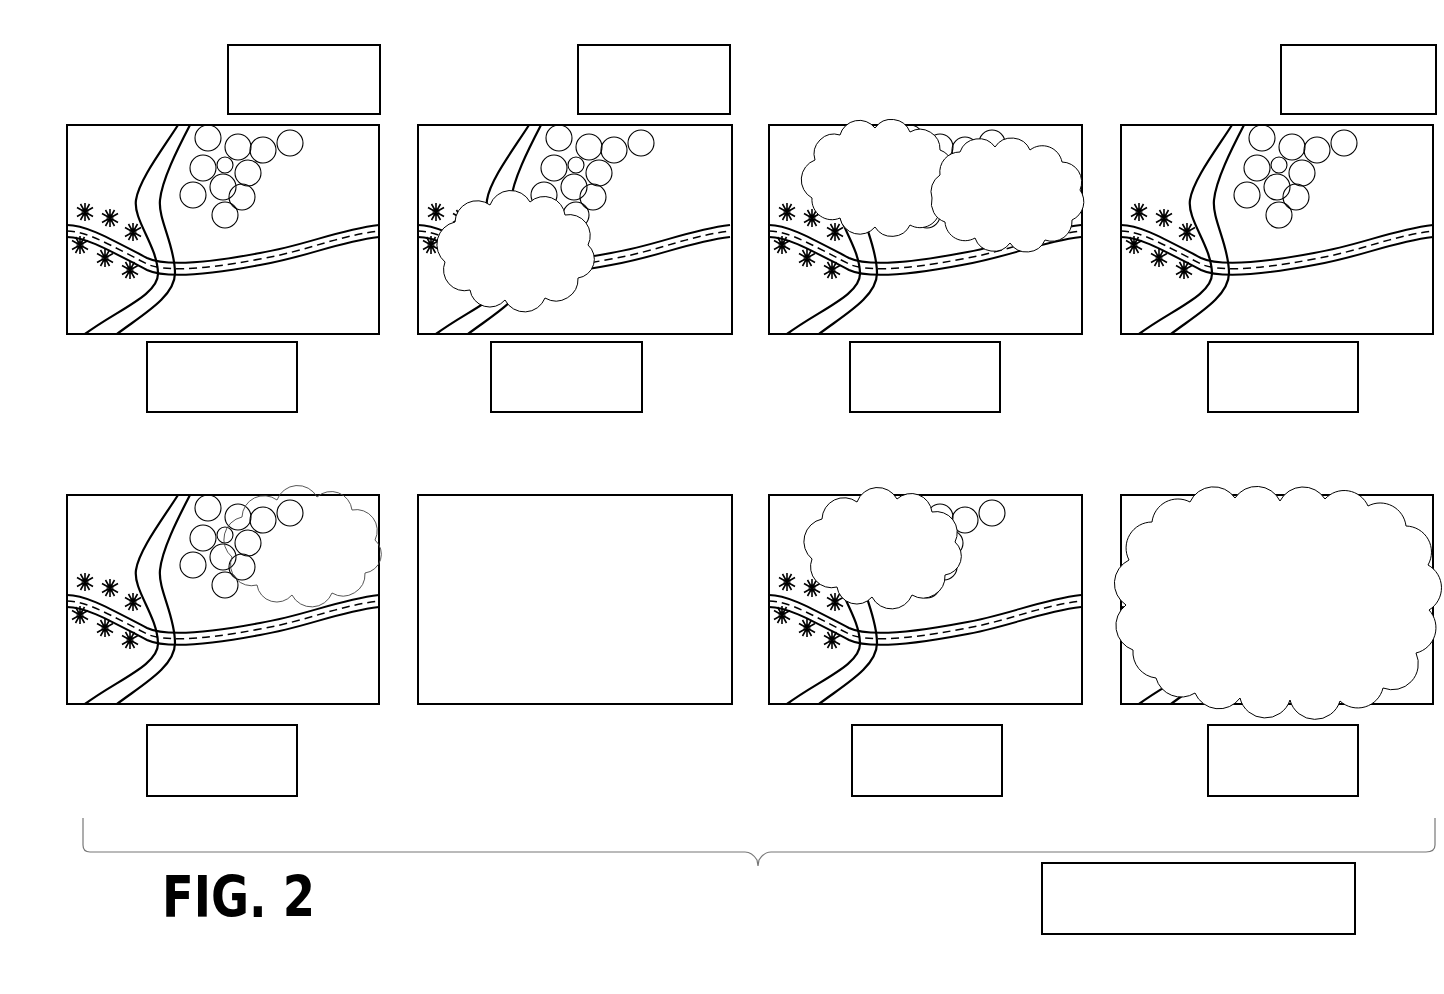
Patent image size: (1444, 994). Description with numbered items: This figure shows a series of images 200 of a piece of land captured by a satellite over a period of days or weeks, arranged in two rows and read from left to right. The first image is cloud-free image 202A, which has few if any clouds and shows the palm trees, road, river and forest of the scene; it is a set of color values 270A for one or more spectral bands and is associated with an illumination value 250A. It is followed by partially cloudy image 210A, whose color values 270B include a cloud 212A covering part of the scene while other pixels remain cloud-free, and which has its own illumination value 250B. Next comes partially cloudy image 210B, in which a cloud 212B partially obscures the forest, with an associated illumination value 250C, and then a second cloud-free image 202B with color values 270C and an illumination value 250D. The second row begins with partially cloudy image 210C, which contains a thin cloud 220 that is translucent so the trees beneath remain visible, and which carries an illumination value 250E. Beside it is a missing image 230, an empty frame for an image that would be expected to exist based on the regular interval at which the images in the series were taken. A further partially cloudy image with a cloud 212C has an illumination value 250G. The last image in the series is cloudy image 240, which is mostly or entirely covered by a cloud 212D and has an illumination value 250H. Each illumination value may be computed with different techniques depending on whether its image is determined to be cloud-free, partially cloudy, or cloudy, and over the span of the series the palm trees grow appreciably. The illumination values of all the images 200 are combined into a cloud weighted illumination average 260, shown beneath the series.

The cloud-free image 202A is at (223, 190).
The color values 270A is at (304, 79).
The partially cloudy image 210A is at (562, 190).
The cloud 212A is at (452, 283).
The color values 270B is at (654, 79).
The partially cloudy image 210B is at (924, 190).
The cloud 212B is at (949, 159).
The cloud-free image 202B is at (1277, 190).
The color values 270C is at (1358, 79).
The illumination value 250A is at (222, 377).
The illumination value 250B is at (566, 377).
The illumination value 250C is at (925, 377).
The illumination value 250D is at (1283, 377).
The partially cloudy image 210C is at (223, 561).
The thin cloud 220 is at (328, 521).
The missing image 230 is at (575, 561).
The cloud 212C is at (925, 569).
The cloudy image 240 is at (1277, 560).
The cloud 212D is at (1266, 592).
The illumination value 250E is at (222, 760).
The illumination value 250G is at (927, 760).
The illumination value 250H is at (1283, 760).
The images 200 is at (759, 872).
The cloud weighted illumination average 260 is at (1198, 898).